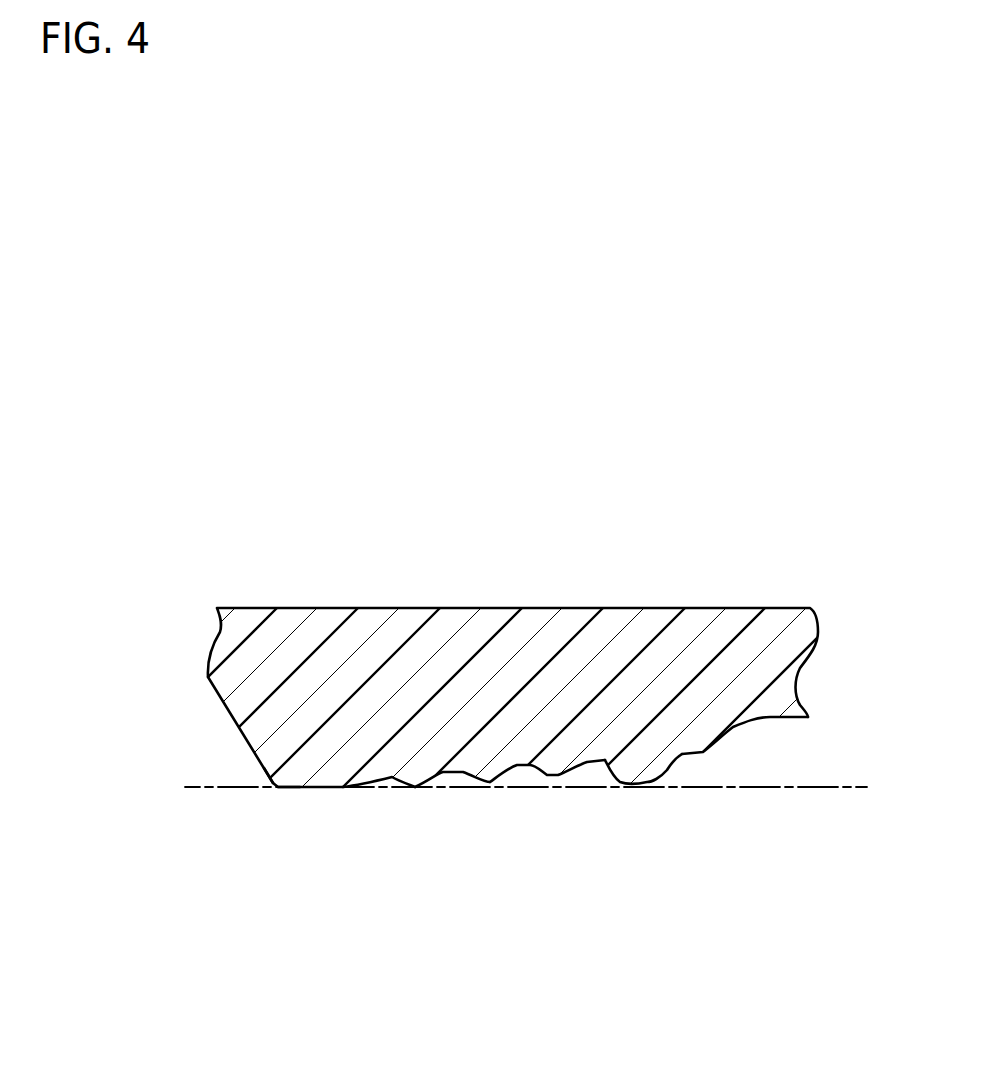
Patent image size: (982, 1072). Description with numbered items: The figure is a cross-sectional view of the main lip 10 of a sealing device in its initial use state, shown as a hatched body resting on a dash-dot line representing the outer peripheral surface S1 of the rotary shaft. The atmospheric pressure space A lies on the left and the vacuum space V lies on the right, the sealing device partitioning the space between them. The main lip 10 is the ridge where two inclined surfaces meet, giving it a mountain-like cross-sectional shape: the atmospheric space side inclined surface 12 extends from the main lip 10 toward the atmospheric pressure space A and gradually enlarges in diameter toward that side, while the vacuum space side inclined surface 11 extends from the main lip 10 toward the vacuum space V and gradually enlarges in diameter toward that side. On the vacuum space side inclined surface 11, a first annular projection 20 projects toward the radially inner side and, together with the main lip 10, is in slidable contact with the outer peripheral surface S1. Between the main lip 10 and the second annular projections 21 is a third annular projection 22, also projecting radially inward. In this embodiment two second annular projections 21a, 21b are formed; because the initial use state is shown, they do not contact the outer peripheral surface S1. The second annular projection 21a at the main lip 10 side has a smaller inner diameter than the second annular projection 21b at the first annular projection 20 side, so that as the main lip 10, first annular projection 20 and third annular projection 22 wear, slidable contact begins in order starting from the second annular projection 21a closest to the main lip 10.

The atmospheric pressure space A is at (203, 726).
The main lip 10 is at (278, 789).
The vacuum space side inclined surface 11 is at (323, 807).
The atmospheric space side inclined surface 12 is at (248, 745).
The first annular projection 20 is at (647, 781).
The second annular projection 21 is at (510, 849).
The second annular projection at the main lip side 21a is at (488, 784).
The second annular projection at the first annular projection side 21b is at (556, 773).
The third annular projection 22 is at (415, 786).
The vacuum space V is at (821, 730).
The outer peripheral surface S1 is at (802, 787).